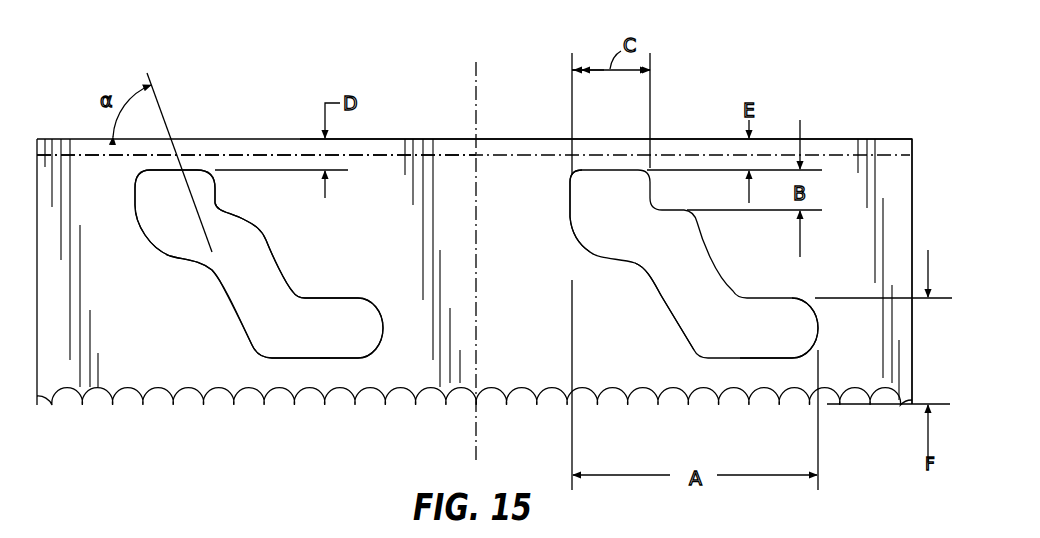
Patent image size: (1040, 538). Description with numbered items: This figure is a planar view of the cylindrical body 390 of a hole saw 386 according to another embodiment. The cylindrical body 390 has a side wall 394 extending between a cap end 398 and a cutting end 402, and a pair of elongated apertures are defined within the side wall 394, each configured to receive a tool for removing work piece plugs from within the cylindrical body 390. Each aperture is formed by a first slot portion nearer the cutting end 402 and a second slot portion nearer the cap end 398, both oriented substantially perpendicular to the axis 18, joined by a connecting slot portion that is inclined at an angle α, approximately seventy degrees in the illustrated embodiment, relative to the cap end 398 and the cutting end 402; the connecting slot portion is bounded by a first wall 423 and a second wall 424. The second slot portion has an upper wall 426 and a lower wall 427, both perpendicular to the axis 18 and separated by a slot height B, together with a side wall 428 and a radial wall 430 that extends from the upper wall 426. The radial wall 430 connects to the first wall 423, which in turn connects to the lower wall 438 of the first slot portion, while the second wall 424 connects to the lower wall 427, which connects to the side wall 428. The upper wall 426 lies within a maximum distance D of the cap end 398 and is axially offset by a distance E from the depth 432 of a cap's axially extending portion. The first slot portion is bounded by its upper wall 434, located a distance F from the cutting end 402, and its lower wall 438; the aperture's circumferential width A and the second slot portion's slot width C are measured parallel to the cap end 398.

The axis 18 is at (478, 106).
The hole saw 386 is at (729, 67).
The cylindrical body 390 is at (913, 183).
The side wall 394 is at (898, 250).
The cap end 398 is at (836, 139).
The cutting end 402 is at (862, 405).
The first wall 423 is at (240, 330).
The second wall 424 is at (272, 266).
The upper wall 426 is at (185, 170).
The lower wall 427 is at (258, 228).
The side wall 428 is at (208, 195).
The radial wall 430 is at (163, 253).
The depth of an axially extending portion of a cap 432 is at (378, 145).
The upper wall 434 is at (335, 297).
The lower wall 438 is at (297, 358).